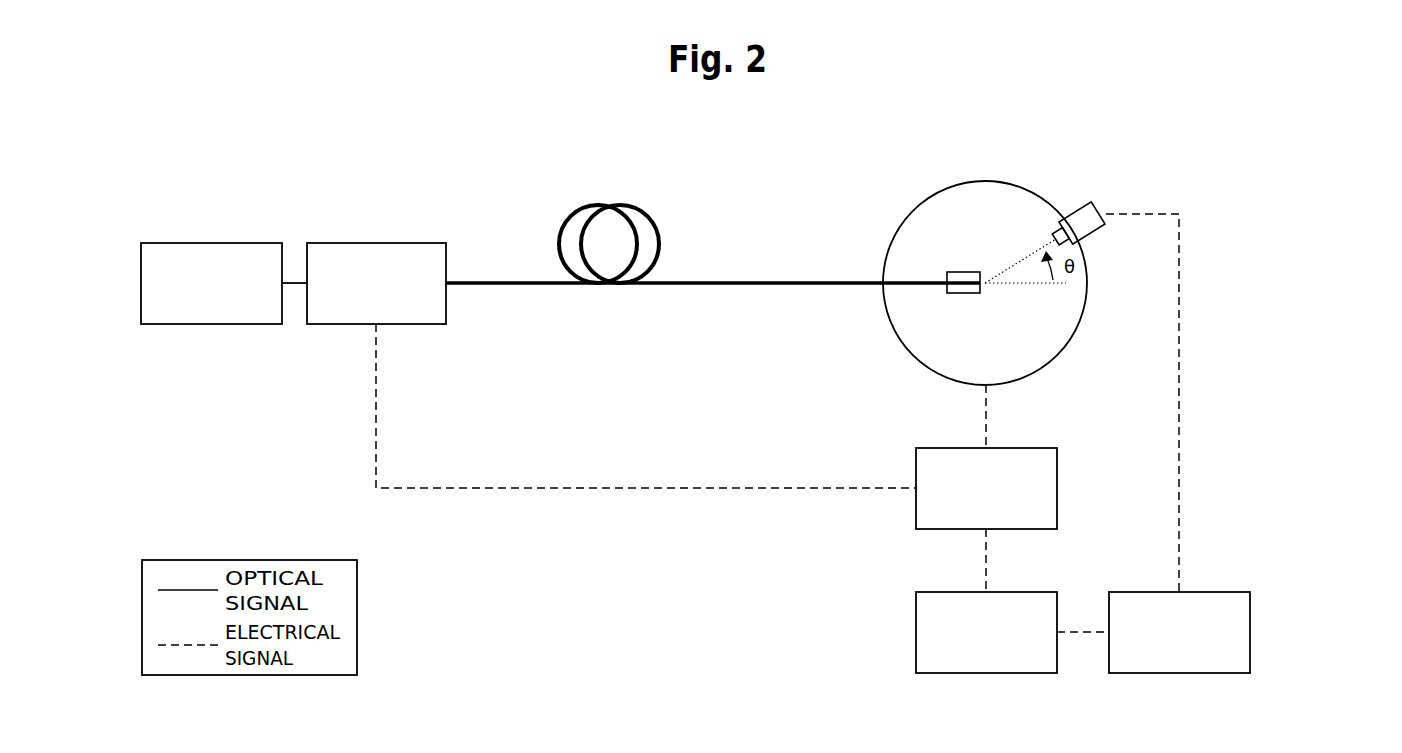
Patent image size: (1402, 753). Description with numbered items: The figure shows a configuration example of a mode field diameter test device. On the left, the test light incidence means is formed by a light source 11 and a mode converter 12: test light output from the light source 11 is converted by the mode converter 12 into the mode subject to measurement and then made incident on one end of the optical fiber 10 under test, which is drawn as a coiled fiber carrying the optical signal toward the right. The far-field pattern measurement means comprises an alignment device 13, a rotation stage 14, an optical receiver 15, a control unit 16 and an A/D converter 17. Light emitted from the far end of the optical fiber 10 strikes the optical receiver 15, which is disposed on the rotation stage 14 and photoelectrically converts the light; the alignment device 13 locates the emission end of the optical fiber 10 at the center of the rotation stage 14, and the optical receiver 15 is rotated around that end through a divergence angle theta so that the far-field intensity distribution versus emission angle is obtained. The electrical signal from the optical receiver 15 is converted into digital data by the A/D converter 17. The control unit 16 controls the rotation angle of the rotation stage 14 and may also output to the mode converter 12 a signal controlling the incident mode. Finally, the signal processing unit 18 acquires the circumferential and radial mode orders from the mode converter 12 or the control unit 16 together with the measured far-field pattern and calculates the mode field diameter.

The optical fiber under test 10 is at (620, 206).
The light source 11 is at (205, 243).
The mode converter 12 is at (401, 243).
The alignment device 13 is at (958, 299).
The rotation stage 14 is at (982, 181).
The optical receiver 15 is at (1086, 203).
The control unit 16 is at (1057, 484).
The A/D converter 17 is at (1252, 625).
The signal processing unit 18 is at (916, 630).